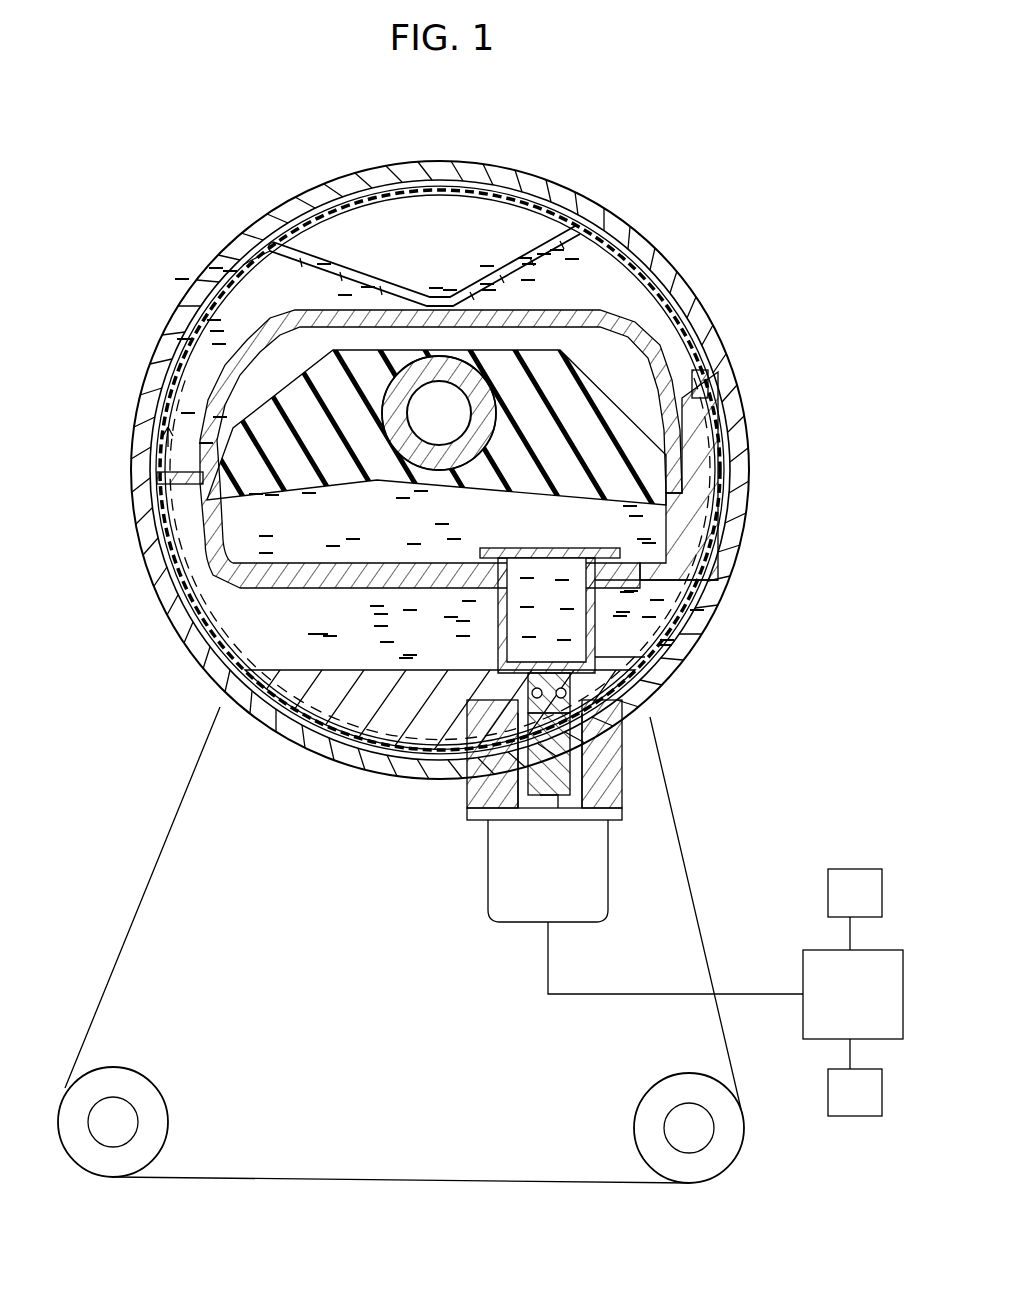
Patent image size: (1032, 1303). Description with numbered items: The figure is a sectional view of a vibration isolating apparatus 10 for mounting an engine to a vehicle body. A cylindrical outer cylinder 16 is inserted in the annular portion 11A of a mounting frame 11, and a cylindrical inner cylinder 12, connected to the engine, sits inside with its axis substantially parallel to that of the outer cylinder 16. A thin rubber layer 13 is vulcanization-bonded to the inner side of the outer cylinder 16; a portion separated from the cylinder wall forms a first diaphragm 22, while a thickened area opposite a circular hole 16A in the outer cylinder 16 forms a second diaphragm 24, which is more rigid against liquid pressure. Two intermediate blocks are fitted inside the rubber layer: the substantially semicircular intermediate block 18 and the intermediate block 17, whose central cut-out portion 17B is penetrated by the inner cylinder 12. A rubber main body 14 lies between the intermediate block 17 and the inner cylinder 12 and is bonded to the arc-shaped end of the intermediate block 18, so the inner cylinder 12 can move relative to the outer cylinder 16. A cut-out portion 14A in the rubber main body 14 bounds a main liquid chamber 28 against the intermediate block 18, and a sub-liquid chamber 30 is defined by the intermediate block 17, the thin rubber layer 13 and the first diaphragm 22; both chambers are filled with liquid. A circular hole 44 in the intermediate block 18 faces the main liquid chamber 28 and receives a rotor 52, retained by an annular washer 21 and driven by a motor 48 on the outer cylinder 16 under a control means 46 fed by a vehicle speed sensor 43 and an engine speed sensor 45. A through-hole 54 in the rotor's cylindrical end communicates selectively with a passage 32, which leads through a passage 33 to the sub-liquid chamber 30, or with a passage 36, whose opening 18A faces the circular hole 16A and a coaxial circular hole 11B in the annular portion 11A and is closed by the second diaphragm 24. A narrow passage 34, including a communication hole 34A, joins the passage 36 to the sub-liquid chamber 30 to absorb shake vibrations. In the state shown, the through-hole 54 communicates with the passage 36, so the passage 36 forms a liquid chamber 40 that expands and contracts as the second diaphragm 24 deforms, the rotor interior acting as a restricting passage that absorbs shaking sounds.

The vibration isolating apparatus 10 is at (662, 240).
The mounting frame 11 is at (695, 853).
The annular portion 11A is at (583, 193).
The circular hole 11B is at (738, 535).
The inner cylinder 12 is at (487, 400).
The thin rubber layer 13 is at (603, 243).
The rubber main body 14 is at (277, 484).
The cut-out portion 14A is at (568, 497).
The outer cylinder 16 is at (745, 413).
The circular hole 16A is at (722, 578).
The intermediate block 17 is at (706, 388).
The cut-out portion 17B is at (230, 433).
The intermediate block 18 is at (737, 492).
The opening 18A is at (698, 588).
The annular washer 21 is at (500, 548).
The first diaphragm 22 is at (307, 240).
The second diaphragm 24 is at (650, 648).
The main liquid chamber 28 is at (412, 534).
The sub-liquid chamber 30 is at (657, 327).
The passage 32 is at (300, 589).
The passage 33 is at (178, 510).
The passage 34 is at (182, 628).
The communication hole 34A is at (655, 712).
The passage 36 is at (610, 585).
The liquid chamber 40 is at (636, 639).
The vehicle speed sensor 43 is at (828, 888).
The circular hole 44 is at (650, 695).
The engine speed sensor 45 is at (828, 1094).
The control means 46 is at (805, 962).
The motor 48 is at (488, 873).
The rotor 52 is at (498, 618).
The through-hole 54 is at (588, 595).